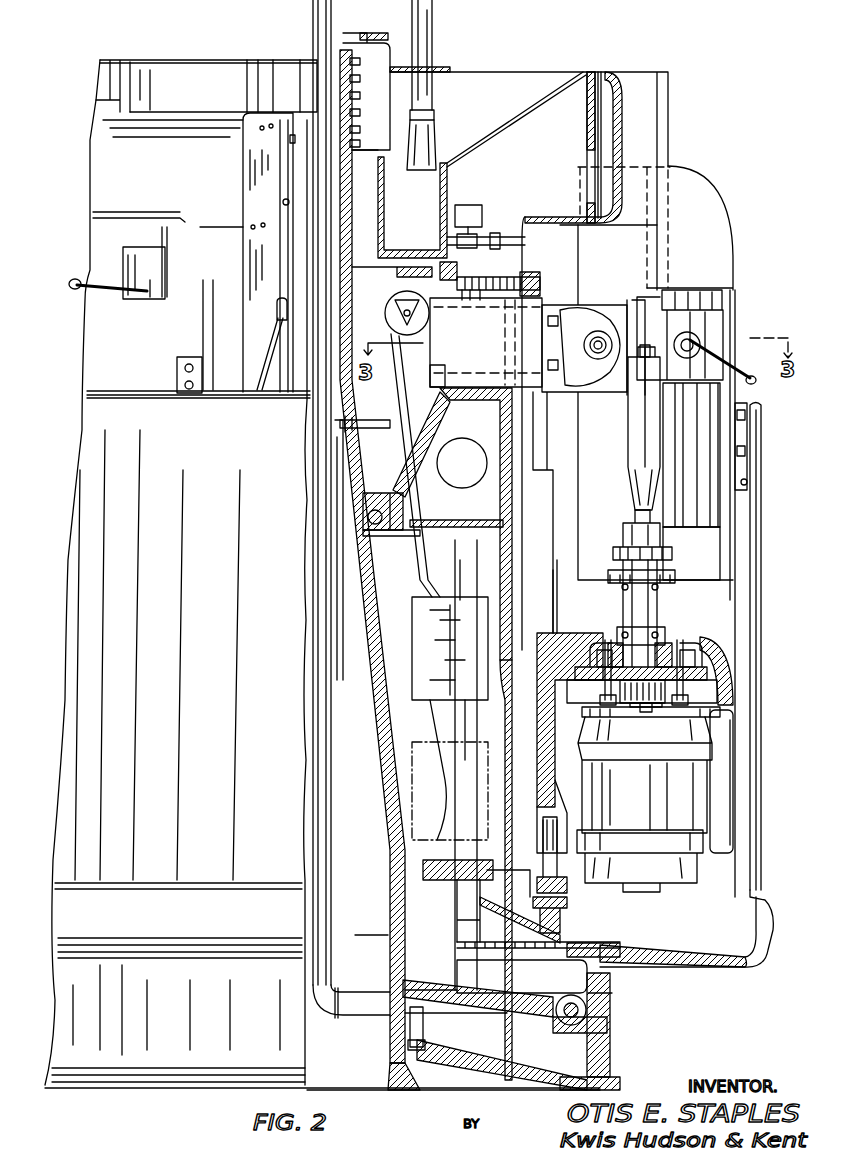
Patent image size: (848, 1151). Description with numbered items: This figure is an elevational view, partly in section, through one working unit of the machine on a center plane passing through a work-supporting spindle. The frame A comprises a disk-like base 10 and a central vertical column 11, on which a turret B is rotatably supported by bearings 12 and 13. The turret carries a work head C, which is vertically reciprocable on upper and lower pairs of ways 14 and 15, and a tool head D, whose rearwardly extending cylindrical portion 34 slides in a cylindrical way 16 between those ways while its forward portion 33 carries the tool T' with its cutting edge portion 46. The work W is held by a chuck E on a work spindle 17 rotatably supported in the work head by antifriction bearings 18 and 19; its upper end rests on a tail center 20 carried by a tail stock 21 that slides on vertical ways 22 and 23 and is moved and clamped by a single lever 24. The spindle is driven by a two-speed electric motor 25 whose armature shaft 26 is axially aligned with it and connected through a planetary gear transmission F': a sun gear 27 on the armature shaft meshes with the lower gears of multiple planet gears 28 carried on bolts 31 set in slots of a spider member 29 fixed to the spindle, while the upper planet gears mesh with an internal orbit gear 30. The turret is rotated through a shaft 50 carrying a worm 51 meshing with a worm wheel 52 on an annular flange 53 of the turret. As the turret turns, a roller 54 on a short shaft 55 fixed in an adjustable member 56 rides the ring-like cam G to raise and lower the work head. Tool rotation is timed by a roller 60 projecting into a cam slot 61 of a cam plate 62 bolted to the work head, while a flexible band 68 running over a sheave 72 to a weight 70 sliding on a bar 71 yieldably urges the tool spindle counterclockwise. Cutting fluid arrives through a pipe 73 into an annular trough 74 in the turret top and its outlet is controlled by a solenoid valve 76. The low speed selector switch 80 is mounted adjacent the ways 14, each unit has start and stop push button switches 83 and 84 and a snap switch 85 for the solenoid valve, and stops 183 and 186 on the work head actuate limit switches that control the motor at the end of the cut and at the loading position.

The base 10 is at (480, 1068).
The central vertical column 11 is at (375, 718).
The bearing 12 is at (380, 540).
The bearing 13 is at (388, 955).
The ways 14 is at (663, 140).
The ways 15 is at (555, 575).
The cylindrical aperture or way 16 is at (440, 378).
The work spindle 17 is at (650, 603).
The antifriction bearing 18 is at (623, 590).
The antifriction bearing 19 is at (620, 628).
The tail center 20 is at (648, 348).
The tail stock 21 is at (135, 255).
The vertical way 22 is at (712, 415).
The vertical way 23 is at (677, 525).
The manually operated lever 24 is at (82, 297).
The two-speed electric motor 25 is at (675, 880).
The armature shaft 26 is at (642, 708).
The sun gear 27 is at (628, 705).
The planet gears 28 is at (733, 693).
The spider member 29 is at (670, 642).
The internal orbit gear 30 is at (570, 665).
The bolts 31 is at (638, 682).
The forward portion of tool head 33 is at (567, 383).
The rearwardly extending cylindrical portion 34 is at (443, 357).
The cutting edge portion 46 is at (600, 382).
The shaft 50 is at (586, 1010).
The worm 51 is at (578, 985).
The worm wheel 52 is at (560, 1012).
The annular flange 53 is at (500, 1005).
The roller 54 is at (545, 920).
The short shaft 55 is at (566, 906).
The member 56 is at (538, 880).
The roller 60 is at (280, 322).
The cam slot 61 is at (272, 365).
The cam plate 62 is at (250, 172).
The flexible band 68 is at (398, 400).
The weight 70 is at (420, 630).
The bar 71 is at (470, 585).
The sheave 72 is at (396, 306).
The pipe 73 is at (427, 46).
The annular trough 74 is at (433, 192).
The solenoid valve 76 is at (467, 210).
The low speed selector switch 80 is at (307, 58).
The start push button switch 83 is at (189, 356).
The stop push button switch 84 is at (181, 390).
The snap switch 85 is at (748, 478).
The stop 183 is at (283, 204).
The stop 186 is at (292, 140).
The frame A is at (610, 1065).
The turret B is at (515, 455).
The work head C is at (137, 157).
The tool head D is at (560, 300).
The chuck E is at (627, 540).
The planetary gear transmission F' is at (689, 659).
The ring-like cam G is at (560, 925).
The tool T' is at (628, 332).
The work W is at (628, 449).